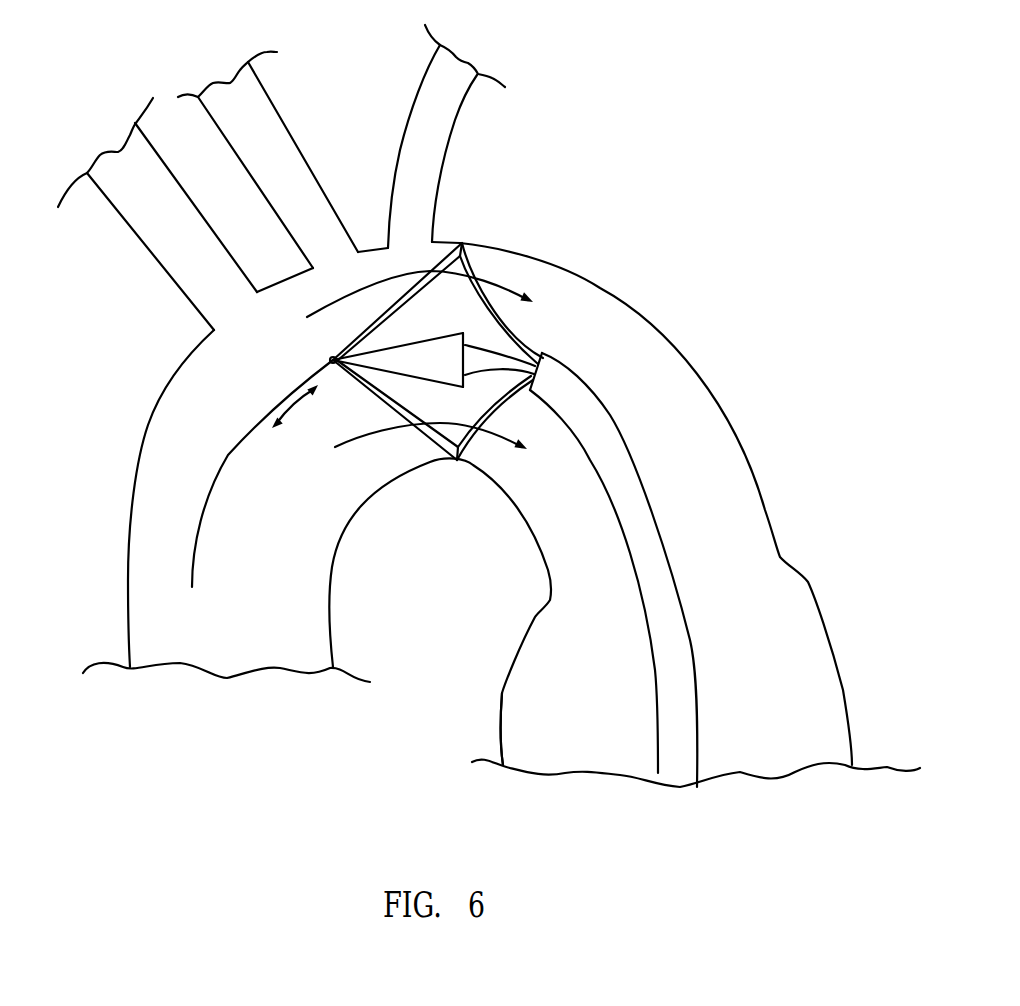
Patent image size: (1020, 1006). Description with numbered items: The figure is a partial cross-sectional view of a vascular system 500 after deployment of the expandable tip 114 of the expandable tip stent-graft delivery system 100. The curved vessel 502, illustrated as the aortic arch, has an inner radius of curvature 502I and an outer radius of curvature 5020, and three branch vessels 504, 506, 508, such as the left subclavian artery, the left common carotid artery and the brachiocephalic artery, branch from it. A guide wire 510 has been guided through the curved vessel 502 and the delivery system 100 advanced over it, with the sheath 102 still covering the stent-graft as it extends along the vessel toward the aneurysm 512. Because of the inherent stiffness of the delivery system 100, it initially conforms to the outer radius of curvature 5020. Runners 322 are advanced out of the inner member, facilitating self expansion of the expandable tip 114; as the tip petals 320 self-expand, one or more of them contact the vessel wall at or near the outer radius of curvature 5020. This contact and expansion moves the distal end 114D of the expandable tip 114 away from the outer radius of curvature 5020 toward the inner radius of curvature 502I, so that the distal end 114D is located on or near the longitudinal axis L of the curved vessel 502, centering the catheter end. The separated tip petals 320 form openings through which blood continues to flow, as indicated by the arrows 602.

The vascular system 500 is at (745, 140).
The curved vessel 502 is at (717, 492).
The outer curvature of aortic arch 5020 is at (570, 264).
The inner radius of curvature 502I is at (442, 463).
The branch vessel 504 is at (443, 114).
The branch vessel 506 is at (275, 137).
The branch vessel 508 is at (150, 220).
The guide wire 510 is at (207, 510).
The aneurysm 512 is at (502, 693).
The expandable tip stent-graft delivery system 100 is at (600, 614).
The sheath 102 is at (678, 687).
The expandable tip 114 is at (405, 266).
The distal end 114D is at (330, 359).
The tip petals 320 is at (443, 258).
The runners 322 is at (514, 352).
The arrows 602 is at (332, 300).
The longitudinal axis L is at (296, 404).